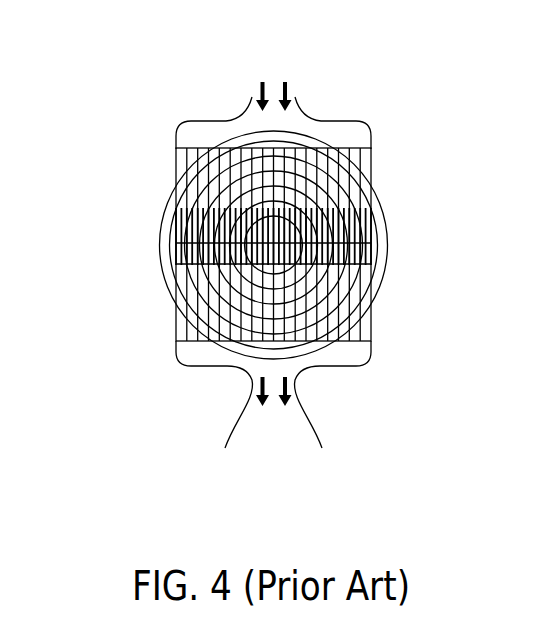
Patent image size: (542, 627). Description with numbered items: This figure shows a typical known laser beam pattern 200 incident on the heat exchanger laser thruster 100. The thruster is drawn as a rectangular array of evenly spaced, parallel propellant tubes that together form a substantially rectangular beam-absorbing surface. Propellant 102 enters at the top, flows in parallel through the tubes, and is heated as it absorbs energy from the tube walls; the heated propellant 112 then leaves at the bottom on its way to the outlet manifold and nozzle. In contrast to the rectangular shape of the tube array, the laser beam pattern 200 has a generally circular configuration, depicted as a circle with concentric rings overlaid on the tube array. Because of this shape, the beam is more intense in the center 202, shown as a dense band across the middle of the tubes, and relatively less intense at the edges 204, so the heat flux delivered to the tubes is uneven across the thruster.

The heat exchanger laser thruster 100 is at (376, 153).
The propellant 102 is at (270, 78).
The heated propellant 112 is at (292, 423).
The laser beam pattern 200 is at (386, 263).
The center 202 is at (293, 214).
The edges 204 is at (163, 216).